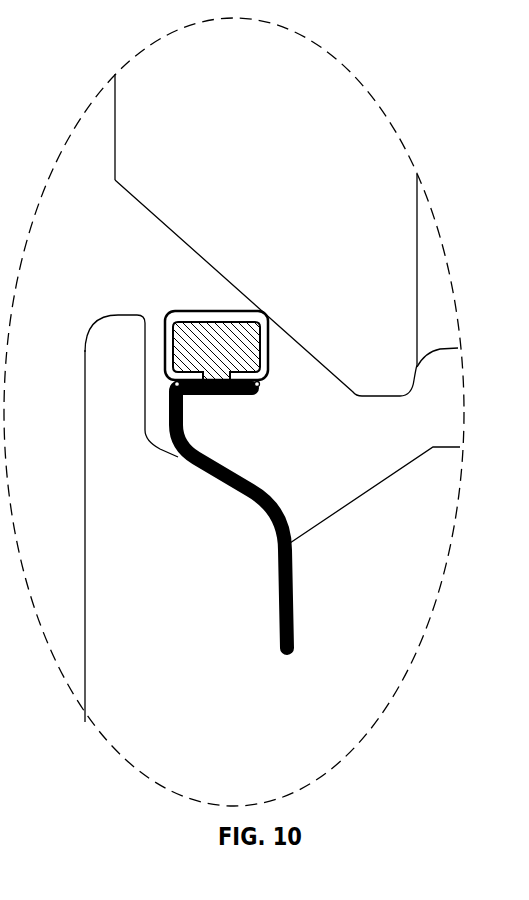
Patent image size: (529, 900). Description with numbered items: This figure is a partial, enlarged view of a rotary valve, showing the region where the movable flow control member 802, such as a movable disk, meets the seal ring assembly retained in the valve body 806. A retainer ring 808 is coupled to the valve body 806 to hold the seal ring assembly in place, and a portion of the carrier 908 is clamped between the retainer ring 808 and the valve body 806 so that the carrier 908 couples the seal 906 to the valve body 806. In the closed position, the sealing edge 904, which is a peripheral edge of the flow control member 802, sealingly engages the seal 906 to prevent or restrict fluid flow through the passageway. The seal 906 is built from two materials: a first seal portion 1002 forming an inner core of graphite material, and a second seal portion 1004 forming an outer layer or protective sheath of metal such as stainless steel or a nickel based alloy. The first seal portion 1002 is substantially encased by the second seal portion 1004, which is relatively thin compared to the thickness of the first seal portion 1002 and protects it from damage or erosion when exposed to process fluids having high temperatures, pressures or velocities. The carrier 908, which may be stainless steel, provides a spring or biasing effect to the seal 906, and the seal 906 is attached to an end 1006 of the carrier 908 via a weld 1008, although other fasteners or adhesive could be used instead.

The flow control member 802 is at (115, 143).
The valve body 806 is at (0, 723).
The retainer ring 808 is at (85, 530).
The sealing edge 904 is at (167, 222).
The seal 906 is at (217, 311).
The carrier 908 is at (263, 475).
The first seal portion 1002 is at (229, 347).
The second seal portion 1004 is at (170, 315).
The end 1006 is at (210, 378).
The weld 1008 is at (177, 386).